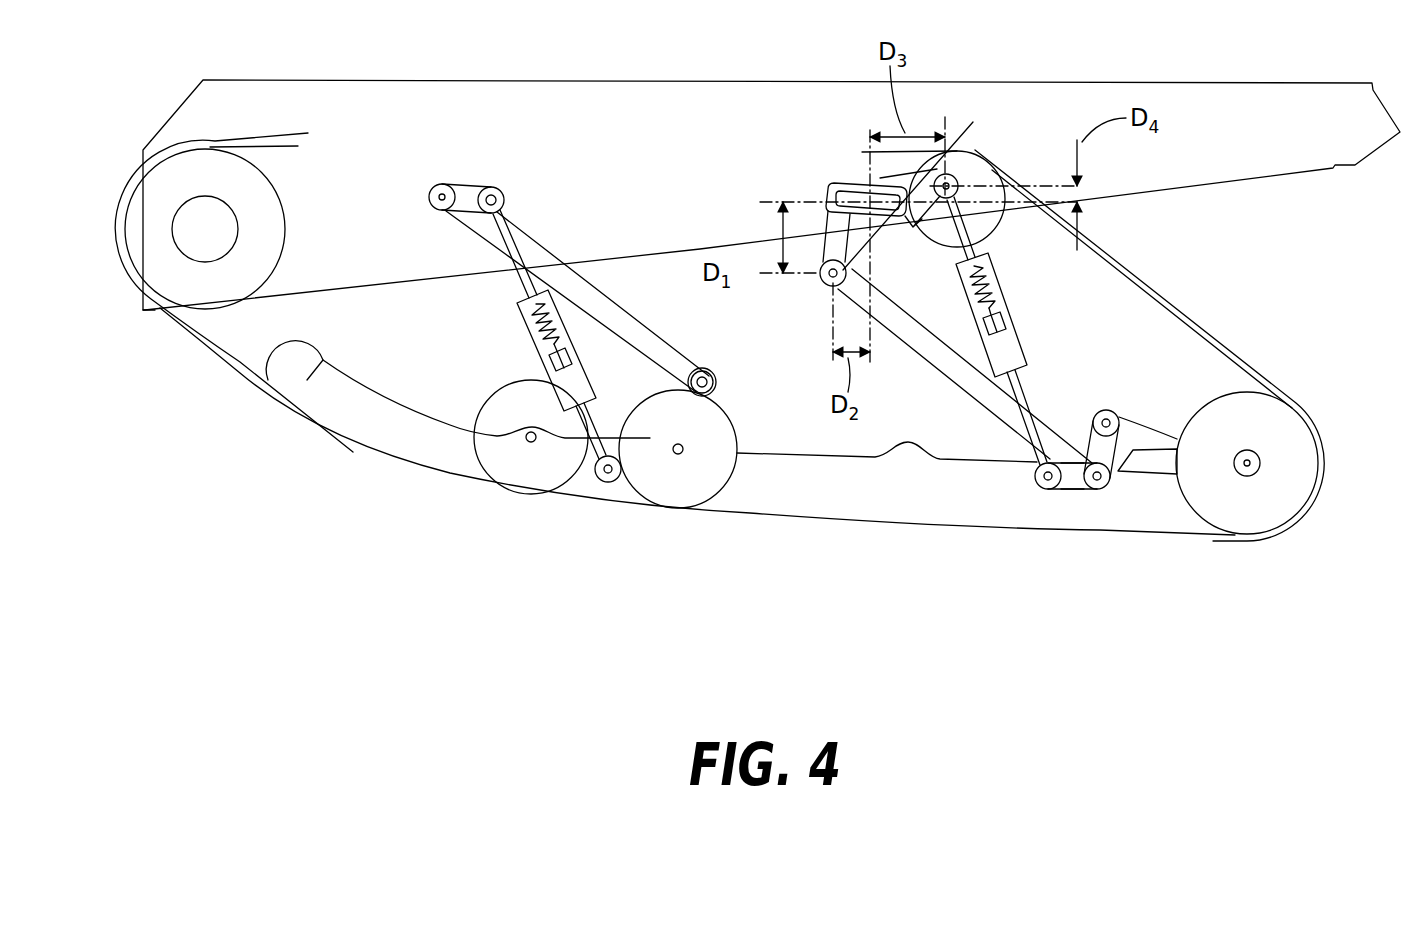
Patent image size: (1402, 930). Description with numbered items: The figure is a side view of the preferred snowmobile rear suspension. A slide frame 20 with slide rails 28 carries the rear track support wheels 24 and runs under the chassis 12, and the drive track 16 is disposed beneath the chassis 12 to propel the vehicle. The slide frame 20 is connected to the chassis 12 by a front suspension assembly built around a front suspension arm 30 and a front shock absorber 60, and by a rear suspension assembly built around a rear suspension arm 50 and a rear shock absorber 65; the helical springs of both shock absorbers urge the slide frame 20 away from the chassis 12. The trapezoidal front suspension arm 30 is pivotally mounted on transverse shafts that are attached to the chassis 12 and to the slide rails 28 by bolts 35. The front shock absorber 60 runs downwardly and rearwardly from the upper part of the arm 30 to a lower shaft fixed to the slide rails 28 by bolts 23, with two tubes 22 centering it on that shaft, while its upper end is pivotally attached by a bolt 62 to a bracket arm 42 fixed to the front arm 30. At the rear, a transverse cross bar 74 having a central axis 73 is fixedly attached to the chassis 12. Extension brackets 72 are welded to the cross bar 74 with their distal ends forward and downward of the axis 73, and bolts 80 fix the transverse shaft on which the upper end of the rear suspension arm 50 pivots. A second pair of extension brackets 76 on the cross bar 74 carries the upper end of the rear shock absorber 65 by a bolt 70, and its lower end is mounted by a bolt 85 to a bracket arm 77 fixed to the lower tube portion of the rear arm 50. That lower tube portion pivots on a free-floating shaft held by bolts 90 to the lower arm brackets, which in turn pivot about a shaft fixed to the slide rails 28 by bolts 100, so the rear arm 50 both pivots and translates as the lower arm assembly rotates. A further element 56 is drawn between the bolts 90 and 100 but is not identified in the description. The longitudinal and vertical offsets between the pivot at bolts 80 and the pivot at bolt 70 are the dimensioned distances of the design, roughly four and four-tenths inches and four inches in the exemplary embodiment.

The chassis 12 is at (1233, 97).
The drive track 16 is at (1238, 345).
The slide frame 20 is at (391, 468).
The tubes 22 is at (595, 481).
The bolts 23 is at (610, 474).
The rear track support wheels 24 is at (1247, 498).
The slide rails 28 is at (465, 457).
The front suspension arm 30 is at (553, 252).
The bolts 35 is at (438, 188).
The bracket arm 42 is at (467, 186).
The rear suspension arm 50 is at (933, 374).
The connecting link 56 is at (1121, 462).
The front shock absorber 60 is at (527, 333).
The bolt 62 is at (502, 185).
The rear shock absorber 65 is at (1007, 308).
The bolt 70 is at (927, 187).
The extension brackets 72 is at (838, 240).
The central axis 73 is at (866, 222).
The transverse cross bar 74 is at (853, 183).
The extension brackets 76 is at (962, 144).
The bracket arm 77 is at (1072, 493).
The bolts 80 is at (829, 286).
The bolt 85 is at (1050, 490).
The bolts 90 is at (1100, 491).
The bolts 100 is at (1107, 412).